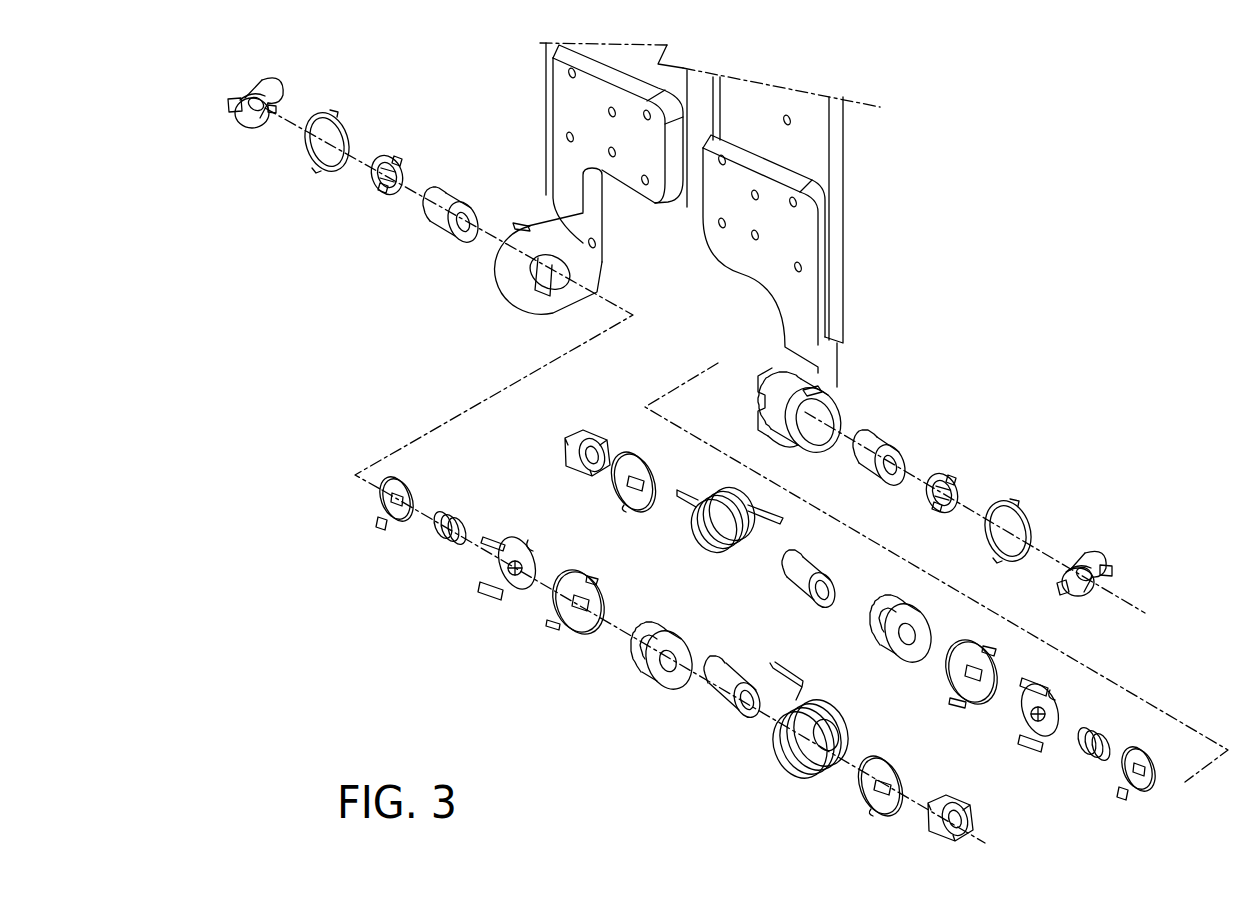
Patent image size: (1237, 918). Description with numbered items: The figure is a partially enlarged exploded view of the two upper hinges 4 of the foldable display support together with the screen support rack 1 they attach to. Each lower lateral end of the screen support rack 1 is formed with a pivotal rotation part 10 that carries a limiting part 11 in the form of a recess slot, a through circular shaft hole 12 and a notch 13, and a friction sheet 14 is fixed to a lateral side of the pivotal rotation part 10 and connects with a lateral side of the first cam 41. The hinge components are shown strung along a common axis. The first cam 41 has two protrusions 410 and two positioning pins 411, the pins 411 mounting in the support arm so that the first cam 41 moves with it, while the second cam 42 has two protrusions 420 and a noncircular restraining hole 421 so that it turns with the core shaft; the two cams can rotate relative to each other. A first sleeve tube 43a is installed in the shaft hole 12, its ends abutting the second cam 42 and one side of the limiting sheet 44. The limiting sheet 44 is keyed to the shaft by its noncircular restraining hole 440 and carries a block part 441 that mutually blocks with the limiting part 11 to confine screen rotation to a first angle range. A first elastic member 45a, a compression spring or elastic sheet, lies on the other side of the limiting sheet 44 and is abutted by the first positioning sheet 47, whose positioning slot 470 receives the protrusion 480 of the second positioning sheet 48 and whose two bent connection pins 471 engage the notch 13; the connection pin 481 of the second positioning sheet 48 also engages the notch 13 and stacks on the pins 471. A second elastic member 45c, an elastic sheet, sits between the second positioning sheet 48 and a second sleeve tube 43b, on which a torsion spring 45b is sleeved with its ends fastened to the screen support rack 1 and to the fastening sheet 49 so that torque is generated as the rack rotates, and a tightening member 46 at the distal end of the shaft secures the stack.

The screen support rack 1 is at (797, 233).
The pivotal rotation part 10 is at (666, 345).
The limiting part 11 is at (532, 292).
The shaft hole 12 is at (575, 273).
The notch 13 is at (548, 240).
The friction sheet 14 is at (1030, 508).
The upper hinge 4 is at (303, 225).
The first cam 41 is at (670, 341).
The protrusions 410 is at (262, 90).
The positioning pins 411 is at (285, 98).
The second cam 42 is at (670, 333).
The protrusions 420 is at (383, 147).
The noncircular restraining hole 421 is at (388, 194).
The first sleeve tube 43a is at (444, 224).
The second sleeve tube 43b is at (717, 697).
The limiting sheet 44 is at (755, 645).
The noncircular restraining hole 440 is at (393, 507).
The block part 441 is at (385, 530).
The first elastic member 45a is at (450, 517).
The torsion spring 45b is at (707, 553).
The second elastic member 45c is at (634, 665).
The tightening member 46 is at (585, 430).
The first positioning sheet 47 is at (767, 637).
The positioning slot 470 is at (530, 545).
The connection pins 471 is at (487, 537).
The second positioning sheet 48 is at (773, 642).
The protrusion 480 is at (595, 578).
The connection pin 481 is at (550, 627).
The fastening sheet 49 is at (653, 460).